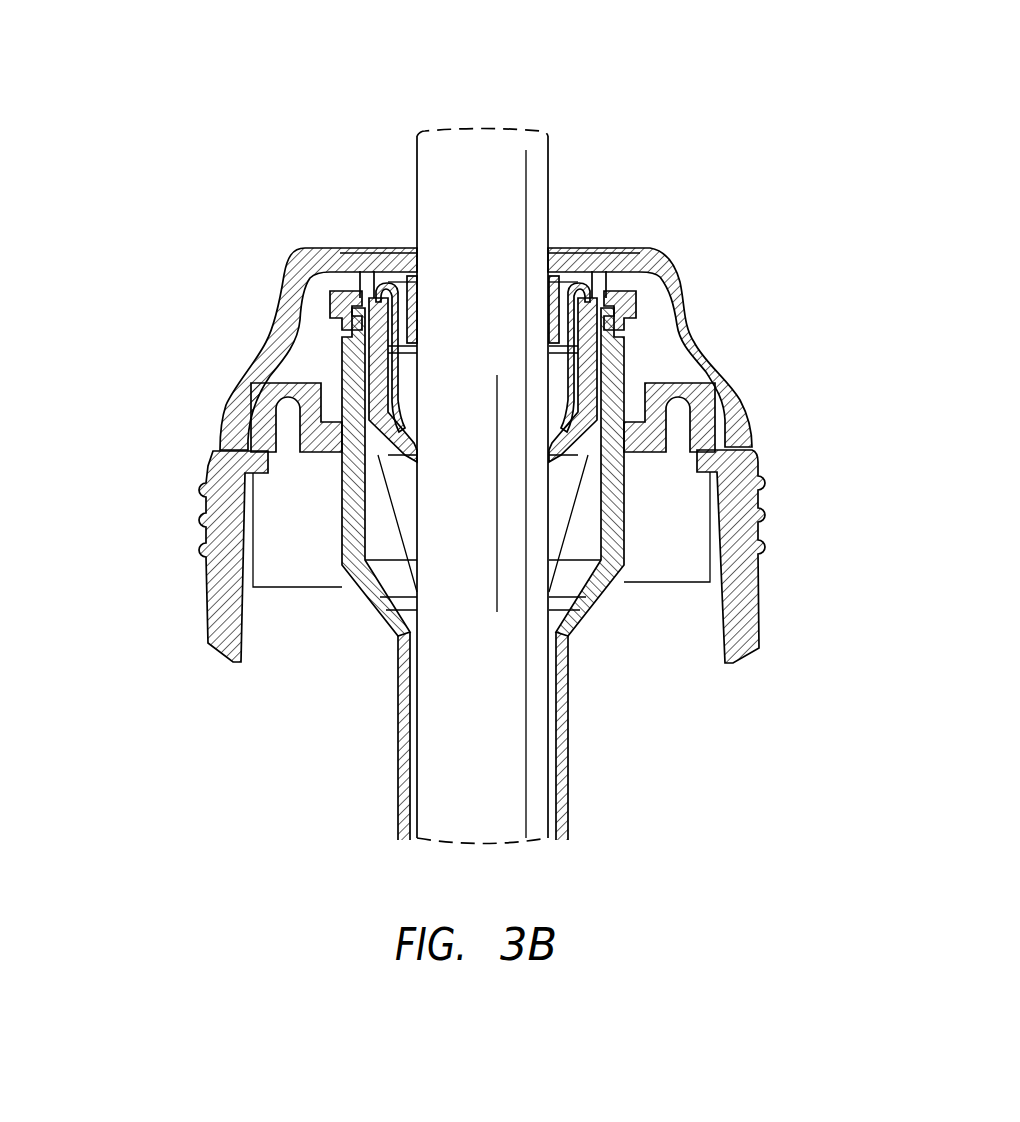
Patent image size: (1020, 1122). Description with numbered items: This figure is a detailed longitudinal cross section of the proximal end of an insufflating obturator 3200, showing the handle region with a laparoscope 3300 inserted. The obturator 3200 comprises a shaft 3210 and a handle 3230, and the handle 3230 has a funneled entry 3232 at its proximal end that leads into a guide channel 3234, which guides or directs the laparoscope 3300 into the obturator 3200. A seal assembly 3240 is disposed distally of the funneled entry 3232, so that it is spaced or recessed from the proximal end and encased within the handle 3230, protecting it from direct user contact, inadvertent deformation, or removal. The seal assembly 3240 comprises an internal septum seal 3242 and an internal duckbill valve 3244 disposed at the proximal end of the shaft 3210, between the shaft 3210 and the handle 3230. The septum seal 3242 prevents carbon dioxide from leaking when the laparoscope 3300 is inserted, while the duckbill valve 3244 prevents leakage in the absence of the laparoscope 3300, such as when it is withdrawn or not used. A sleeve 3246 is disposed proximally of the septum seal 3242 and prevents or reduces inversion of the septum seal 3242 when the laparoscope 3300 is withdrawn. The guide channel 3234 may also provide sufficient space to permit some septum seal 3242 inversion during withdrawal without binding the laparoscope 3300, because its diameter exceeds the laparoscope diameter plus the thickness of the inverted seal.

The insufflating obturator 3200 is at (228, 236).
The shaft 3210 is at (568, 730).
The handle 3230 is at (700, 323).
The funneled entry 3232 is at (408, 256).
The guide channel 3234 is at (552, 303).
The seal assembly 3240 is at (100, 490).
The septum seal 3242 is at (395, 413).
The duckbill valve 3244 is at (380, 478).
The sleeve 3246 is at (393, 375).
The laparoscope 3300 is at (560, 137).